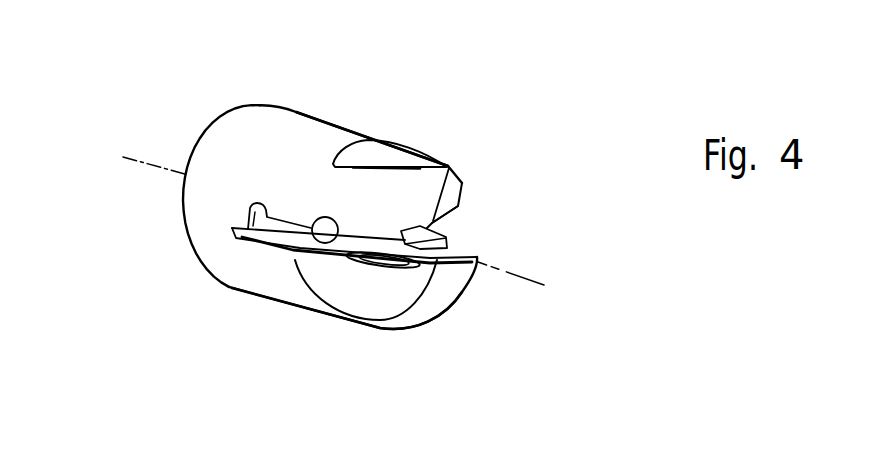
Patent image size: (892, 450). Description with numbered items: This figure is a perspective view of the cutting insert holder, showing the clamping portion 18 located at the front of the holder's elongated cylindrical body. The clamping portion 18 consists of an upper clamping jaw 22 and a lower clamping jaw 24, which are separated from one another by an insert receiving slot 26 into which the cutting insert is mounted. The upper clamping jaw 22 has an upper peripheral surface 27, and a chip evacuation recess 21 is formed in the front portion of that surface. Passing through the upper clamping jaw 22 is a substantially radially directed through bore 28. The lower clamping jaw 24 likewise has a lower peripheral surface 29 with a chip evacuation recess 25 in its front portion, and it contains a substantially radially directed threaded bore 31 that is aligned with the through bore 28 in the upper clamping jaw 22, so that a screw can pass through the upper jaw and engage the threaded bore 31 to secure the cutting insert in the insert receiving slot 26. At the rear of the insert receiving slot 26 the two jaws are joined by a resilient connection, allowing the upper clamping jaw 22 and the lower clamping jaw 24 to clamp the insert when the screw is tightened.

The clamping portion 18 is at (165, 274).
The chip evacuation recess 21 is at (453, 202).
The upper clamping jaw 22 is at (475, 158).
The lower clamping jaw 24 is at (448, 333).
The chip evacuation recess 25 is at (333, 280).
The insert receiving slot 26 is at (470, 243).
The upper peripheral surface 27 is at (288, 130).
The through bore 28 is at (392, 162).
The lower peripheral surface 29 is at (250, 288).
The threaded bore 31 is at (380, 273).